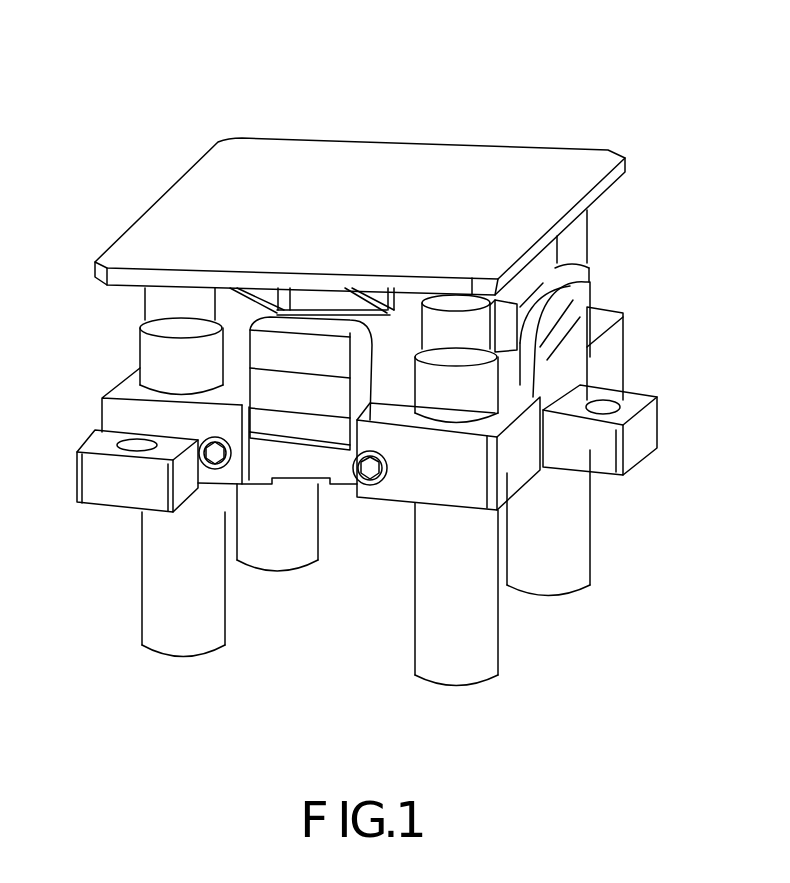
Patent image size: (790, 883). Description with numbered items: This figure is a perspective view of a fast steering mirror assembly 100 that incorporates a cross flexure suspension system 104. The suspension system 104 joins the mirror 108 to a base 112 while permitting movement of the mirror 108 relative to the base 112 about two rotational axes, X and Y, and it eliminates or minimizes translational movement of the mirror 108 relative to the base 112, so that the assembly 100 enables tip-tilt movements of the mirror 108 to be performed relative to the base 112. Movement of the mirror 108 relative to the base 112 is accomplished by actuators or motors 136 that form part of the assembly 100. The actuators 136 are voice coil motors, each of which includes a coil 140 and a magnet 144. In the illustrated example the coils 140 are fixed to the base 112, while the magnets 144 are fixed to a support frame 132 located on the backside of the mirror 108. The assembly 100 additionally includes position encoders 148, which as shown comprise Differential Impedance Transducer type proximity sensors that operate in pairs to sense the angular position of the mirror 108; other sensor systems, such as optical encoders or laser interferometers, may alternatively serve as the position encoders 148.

The fast steering mirror assembly 100 is at (371, 358).
The cross flexure suspension system 104 is at (312, 296).
The mirror 108 is at (573, 160).
The base 112 is at (517, 472).
The support frame 132 is at (603, 197).
The actuator 136 is at (328, 405).
The coil 140 is at (567, 342).
The magnet 144 is at (502, 325).
The position encoder 148 is at (500, 655).